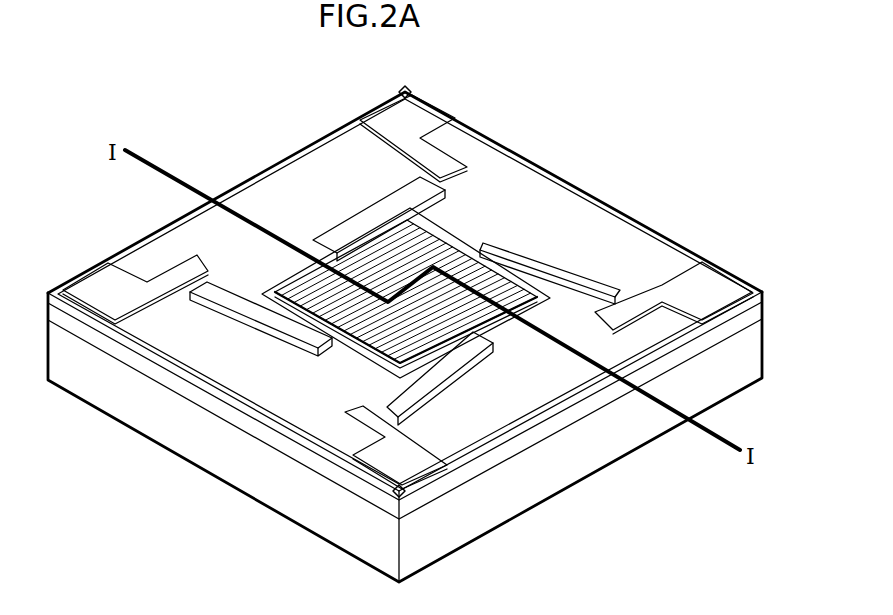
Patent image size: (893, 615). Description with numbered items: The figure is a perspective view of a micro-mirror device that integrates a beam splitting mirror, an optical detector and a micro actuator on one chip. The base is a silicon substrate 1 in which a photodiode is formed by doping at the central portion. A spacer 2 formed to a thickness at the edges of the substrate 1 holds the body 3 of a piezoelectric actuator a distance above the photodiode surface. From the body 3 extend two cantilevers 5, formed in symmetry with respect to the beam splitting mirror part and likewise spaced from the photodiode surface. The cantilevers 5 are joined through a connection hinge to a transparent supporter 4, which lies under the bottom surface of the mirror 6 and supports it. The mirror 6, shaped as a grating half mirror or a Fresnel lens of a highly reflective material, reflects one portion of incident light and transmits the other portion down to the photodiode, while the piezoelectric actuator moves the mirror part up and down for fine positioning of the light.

The substrate 1 is at (208, 452).
The spacer 2 is at (485, 467).
The body 3 is at (562, 213).
The supporter 4 is at (347, 358).
The cantilever 5 is at (560, 287).
The mirror 6 is at (440, 212).